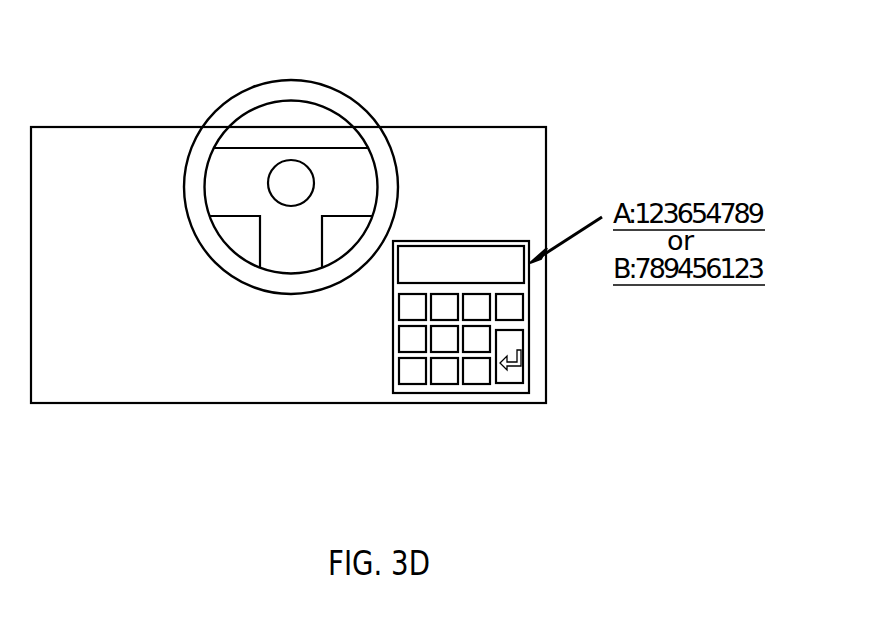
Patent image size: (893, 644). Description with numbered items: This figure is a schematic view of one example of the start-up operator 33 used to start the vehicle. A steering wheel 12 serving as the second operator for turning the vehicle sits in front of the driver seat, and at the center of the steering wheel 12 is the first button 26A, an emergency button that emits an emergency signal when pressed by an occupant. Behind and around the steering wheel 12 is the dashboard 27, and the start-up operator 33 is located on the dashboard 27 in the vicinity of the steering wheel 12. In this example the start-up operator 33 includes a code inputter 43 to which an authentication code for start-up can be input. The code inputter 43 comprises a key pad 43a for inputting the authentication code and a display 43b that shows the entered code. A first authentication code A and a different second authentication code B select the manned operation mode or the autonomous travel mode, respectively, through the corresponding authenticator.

The steering wheel 12 is at (318, 88).
The dashboard 27 is at (87, 135).
The first button 26A is at (281, 175).
The start-up operator 33 is at (358, 343).
The code inputter 43 is at (498, 312).
The key pad 43a is at (443, 385).
The display 43b is at (459, 244).